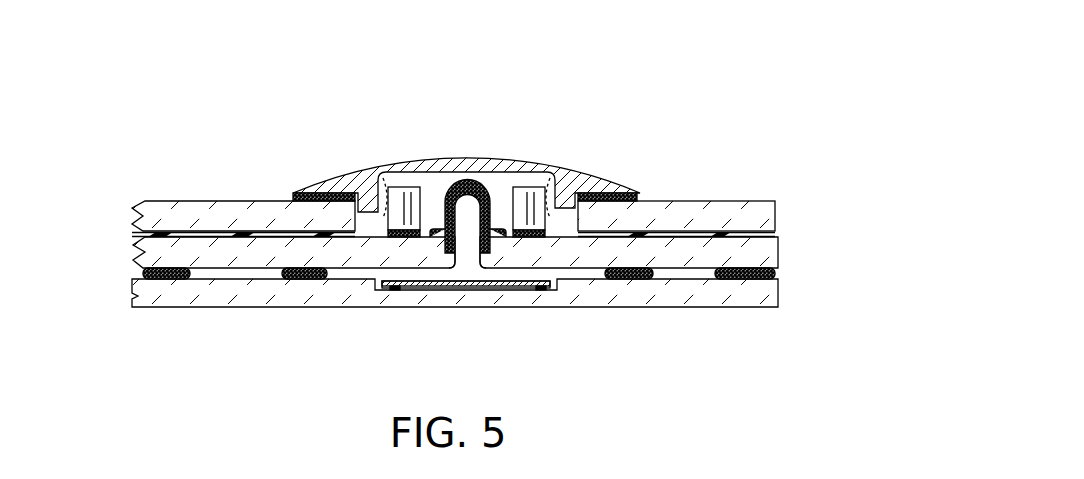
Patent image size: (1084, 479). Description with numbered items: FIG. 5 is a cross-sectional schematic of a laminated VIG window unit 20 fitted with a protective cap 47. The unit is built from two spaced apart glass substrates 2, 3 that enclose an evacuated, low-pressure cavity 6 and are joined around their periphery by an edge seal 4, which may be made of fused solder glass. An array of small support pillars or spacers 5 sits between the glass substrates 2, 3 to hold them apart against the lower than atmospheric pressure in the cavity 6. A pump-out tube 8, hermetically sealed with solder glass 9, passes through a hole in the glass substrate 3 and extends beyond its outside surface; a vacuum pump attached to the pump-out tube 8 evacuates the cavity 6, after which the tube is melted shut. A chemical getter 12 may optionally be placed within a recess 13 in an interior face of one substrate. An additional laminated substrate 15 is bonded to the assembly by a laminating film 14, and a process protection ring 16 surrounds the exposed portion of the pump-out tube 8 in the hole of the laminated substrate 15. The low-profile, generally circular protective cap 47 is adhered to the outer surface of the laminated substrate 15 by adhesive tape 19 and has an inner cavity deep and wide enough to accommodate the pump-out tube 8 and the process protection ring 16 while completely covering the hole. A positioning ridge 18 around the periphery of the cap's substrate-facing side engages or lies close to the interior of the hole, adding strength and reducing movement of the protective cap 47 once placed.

The laminated VIG window unit 20 is at (641, 86).
The glass substrate 2 is at (150, 291).
The glass substrate 3 is at (165, 251).
The peripheral edge seal 4 is at (738, 283).
The support pillars/spacers 5 is at (300, 276).
The cavity 6 is at (356, 276).
The pump-out tube 8 is at (469, 178).
The solder glass 9 is at (497, 220).
The chemical getter 12 is at (541, 291).
The recess 13 is at (422, 292).
The laminating film 14 is at (775, 233).
The laminated substrate 15 is at (752, 208).
The process protection ring 16 is at (537, 196).
The positioning ridge 18 is at (350, 196).
The adhesive tape 19 is at (629, 194).
The protective cap 47 is at (392, 156).